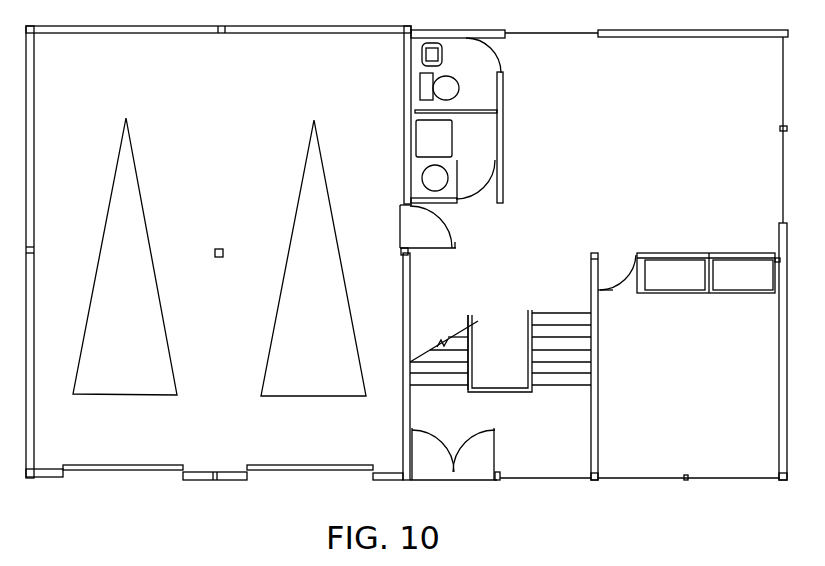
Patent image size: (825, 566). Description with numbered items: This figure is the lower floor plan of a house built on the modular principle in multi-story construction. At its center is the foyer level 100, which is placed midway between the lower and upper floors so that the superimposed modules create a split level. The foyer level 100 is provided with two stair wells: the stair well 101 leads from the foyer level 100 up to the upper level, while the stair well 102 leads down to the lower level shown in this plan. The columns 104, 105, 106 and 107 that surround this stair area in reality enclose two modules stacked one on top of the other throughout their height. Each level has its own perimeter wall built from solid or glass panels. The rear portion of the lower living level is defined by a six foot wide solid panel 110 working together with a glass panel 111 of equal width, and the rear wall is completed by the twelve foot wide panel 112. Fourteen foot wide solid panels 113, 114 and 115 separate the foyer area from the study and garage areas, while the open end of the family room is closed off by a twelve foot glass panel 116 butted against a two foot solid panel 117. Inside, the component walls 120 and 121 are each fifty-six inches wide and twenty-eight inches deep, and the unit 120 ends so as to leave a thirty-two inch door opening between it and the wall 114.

The foyer level 100 is at (531, 468).
The stair well 101 is at (430, 383).
The stair well 102 is at (553, 383).
The column 104 is at (401, 481).
The column 105 is at (408, 254).
The column 106 is at (596, 247).
The column 107 is at (590, 482).
The solid panel 110 is at (450, 30).
The glass panel 111 is at (553, 34).
The panel 112 is at (673, 38).
The solid panel 113 is at (403, 414).
The solid panel 114 is at (594, 425).
The solid panel 115 is at (781, 388).
The glass panel 116 is at (781, 163).
The solid panel 117 is at (779, 244).
The component wall 120 is at (661, 287).
The component wall 121 is at (728, 287).